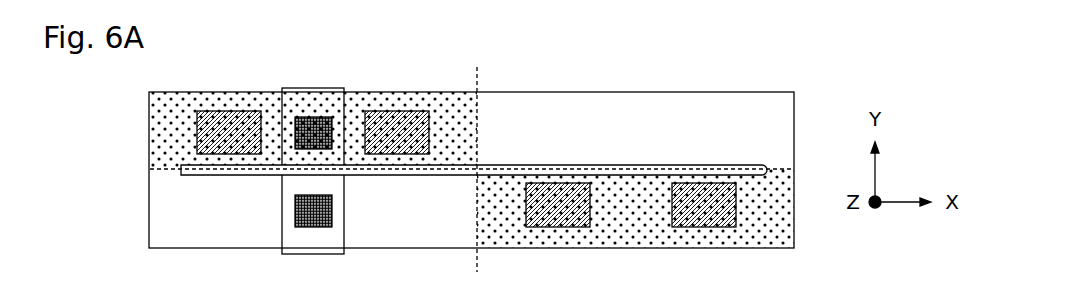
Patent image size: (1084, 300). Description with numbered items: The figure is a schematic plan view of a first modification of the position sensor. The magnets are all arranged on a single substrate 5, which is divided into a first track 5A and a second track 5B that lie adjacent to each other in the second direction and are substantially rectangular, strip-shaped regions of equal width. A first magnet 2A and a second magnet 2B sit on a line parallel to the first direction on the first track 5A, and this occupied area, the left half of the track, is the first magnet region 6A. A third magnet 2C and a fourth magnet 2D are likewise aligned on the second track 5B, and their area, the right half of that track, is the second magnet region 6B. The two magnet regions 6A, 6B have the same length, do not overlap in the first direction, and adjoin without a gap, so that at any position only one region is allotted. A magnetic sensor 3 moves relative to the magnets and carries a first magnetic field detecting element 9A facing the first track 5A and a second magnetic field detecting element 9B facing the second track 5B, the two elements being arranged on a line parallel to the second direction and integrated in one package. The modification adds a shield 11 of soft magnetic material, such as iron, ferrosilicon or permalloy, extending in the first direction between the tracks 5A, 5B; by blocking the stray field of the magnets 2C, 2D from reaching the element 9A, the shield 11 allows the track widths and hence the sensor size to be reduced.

The first magnet 2A is at (215, 154).
The second magnet 2B is at (390, 154).
The third magnet 2C is at (560, 227).
The fourth magnet 2D is at (713, 227).
The magnetic sensor 3 is at (310, 88).
The substrate 5 is at (87, 122).
The first track 5A is at (136, 92).
The second track 5B is at (136, 173).
The first magnet region 6A is at (280, 143).
The second magnet region 6B is at (650, 210).
The first magnetic field detecting element 9A is at (297, 117).
The second magnetic field detecting element 9B is at (310, 195).
The shield 11 is at (488, 166).